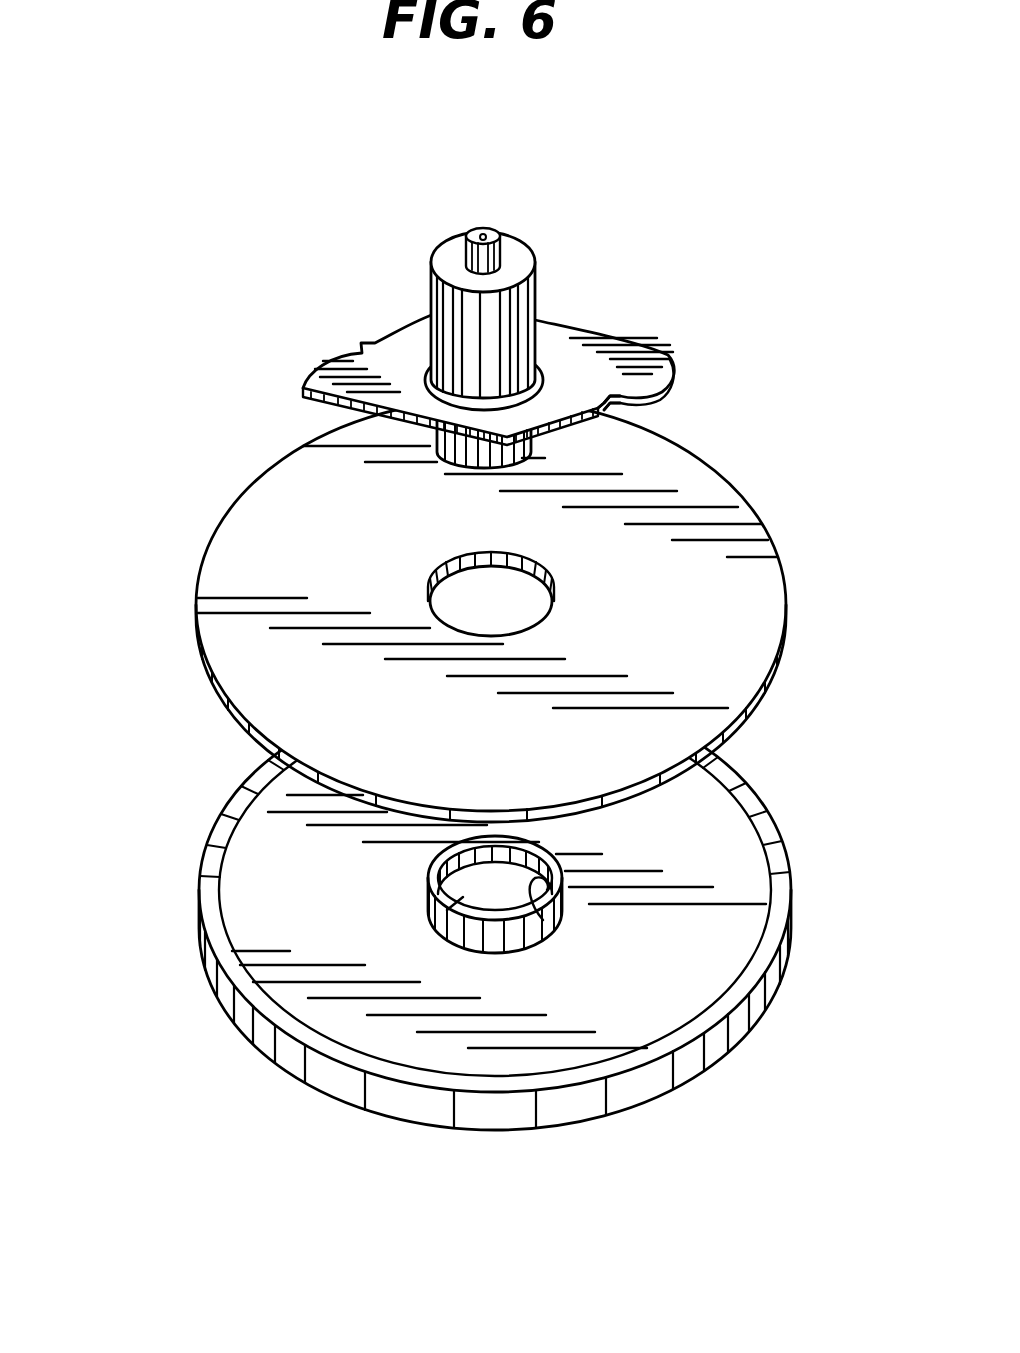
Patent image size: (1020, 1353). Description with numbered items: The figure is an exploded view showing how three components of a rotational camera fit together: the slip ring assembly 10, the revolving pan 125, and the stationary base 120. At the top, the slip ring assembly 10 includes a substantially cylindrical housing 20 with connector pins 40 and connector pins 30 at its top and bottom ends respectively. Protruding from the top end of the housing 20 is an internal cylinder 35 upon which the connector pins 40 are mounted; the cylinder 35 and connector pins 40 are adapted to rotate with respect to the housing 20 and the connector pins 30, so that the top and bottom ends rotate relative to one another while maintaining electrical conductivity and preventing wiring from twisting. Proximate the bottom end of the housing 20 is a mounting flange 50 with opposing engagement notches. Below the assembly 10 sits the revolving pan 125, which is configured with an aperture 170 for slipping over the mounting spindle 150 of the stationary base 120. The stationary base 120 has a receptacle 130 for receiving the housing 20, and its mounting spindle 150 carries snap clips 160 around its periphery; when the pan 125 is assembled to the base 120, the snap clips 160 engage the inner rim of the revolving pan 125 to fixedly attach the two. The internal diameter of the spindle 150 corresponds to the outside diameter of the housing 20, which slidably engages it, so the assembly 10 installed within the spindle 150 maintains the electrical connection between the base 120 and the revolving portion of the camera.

The slip ring assembly 10 is at (678, 240).
The housing 20 is at (489, 562).
The connector pins 30 is at (569, 359).
The internal cylinder 35 is at (486, 282).
The connector pins 40 is at (483, 228).
The mounting flange 50 is at (668, 395).
The stationary base 120 is at (419, 964).
The revolving pan 125 is at (212, 677).
The receptacle 130 is at (432, 918).
The mounting spindle 150 is at (488, 942).
The snap clips 160 is at (432, 880).
The aperture 170 is at (494, 608).